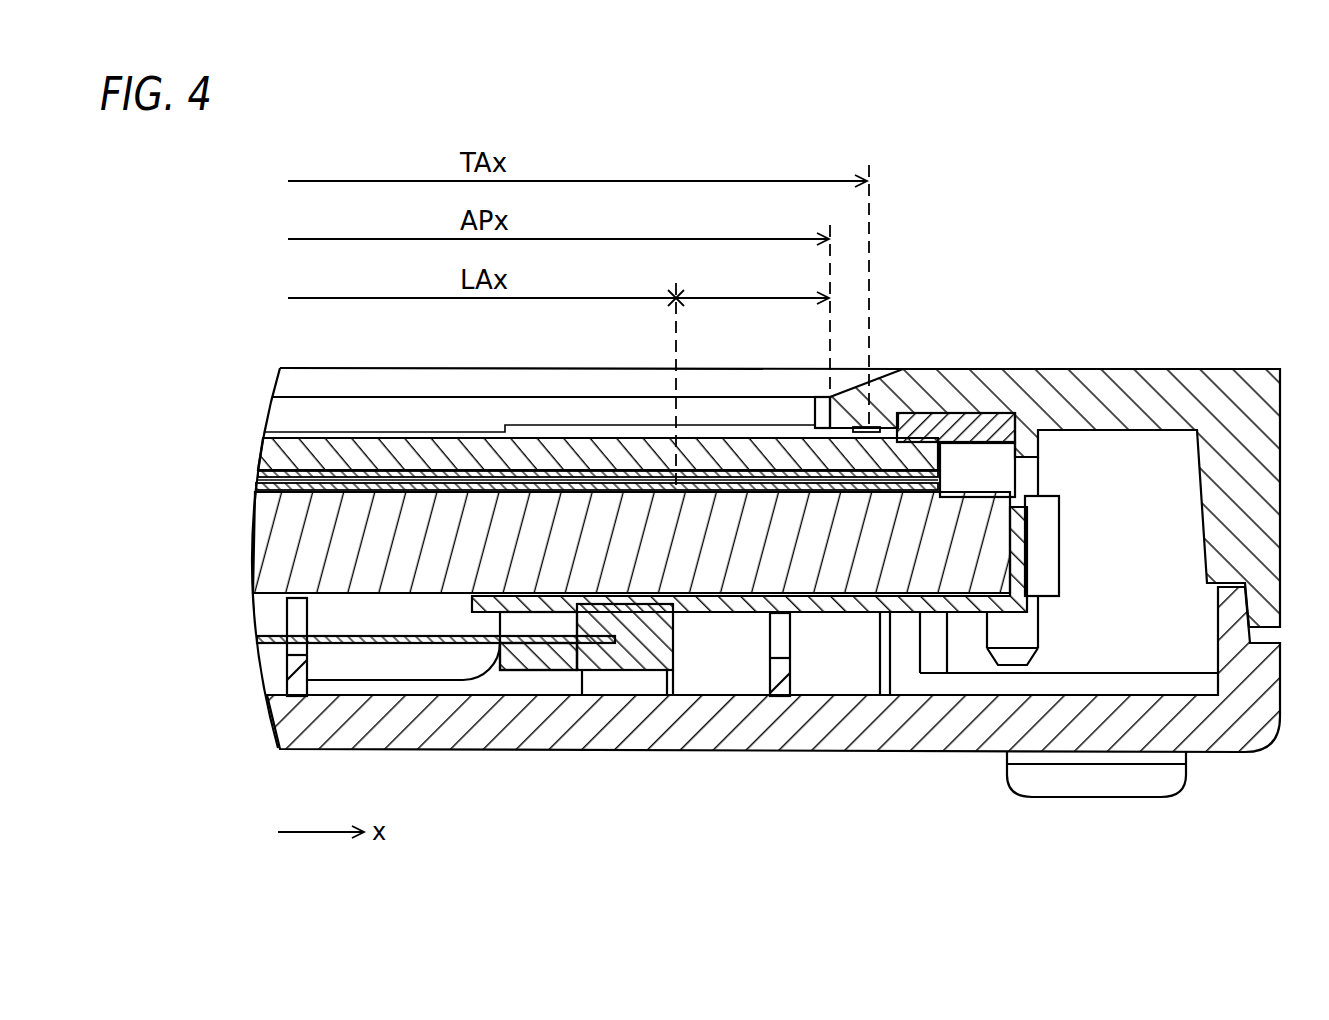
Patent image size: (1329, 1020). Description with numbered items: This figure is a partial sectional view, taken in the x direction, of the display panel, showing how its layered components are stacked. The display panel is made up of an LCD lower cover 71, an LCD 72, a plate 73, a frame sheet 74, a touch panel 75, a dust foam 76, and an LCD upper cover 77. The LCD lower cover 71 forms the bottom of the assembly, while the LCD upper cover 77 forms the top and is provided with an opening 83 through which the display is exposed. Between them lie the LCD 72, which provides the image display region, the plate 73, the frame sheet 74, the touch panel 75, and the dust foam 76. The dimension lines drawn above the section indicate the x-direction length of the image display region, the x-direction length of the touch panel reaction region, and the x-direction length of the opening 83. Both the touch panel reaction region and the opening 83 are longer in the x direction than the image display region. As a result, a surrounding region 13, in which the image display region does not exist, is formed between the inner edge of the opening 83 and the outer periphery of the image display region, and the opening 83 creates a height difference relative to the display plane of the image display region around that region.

The surrounding region 13 is at (752, 284).
The LCD lower cover 71 is at (290, 727).
The LCD 72 is at (291, 538).
The plate 73 is at (258, 487).
The frame sheet 74 is at (942, 478).
The touch panel 75 is at (370, 452).
The dust foam 76 is at (963, 427).
The LCD upper cover 77 is at (1122, 385).
The opening 83 is at (812, 420).